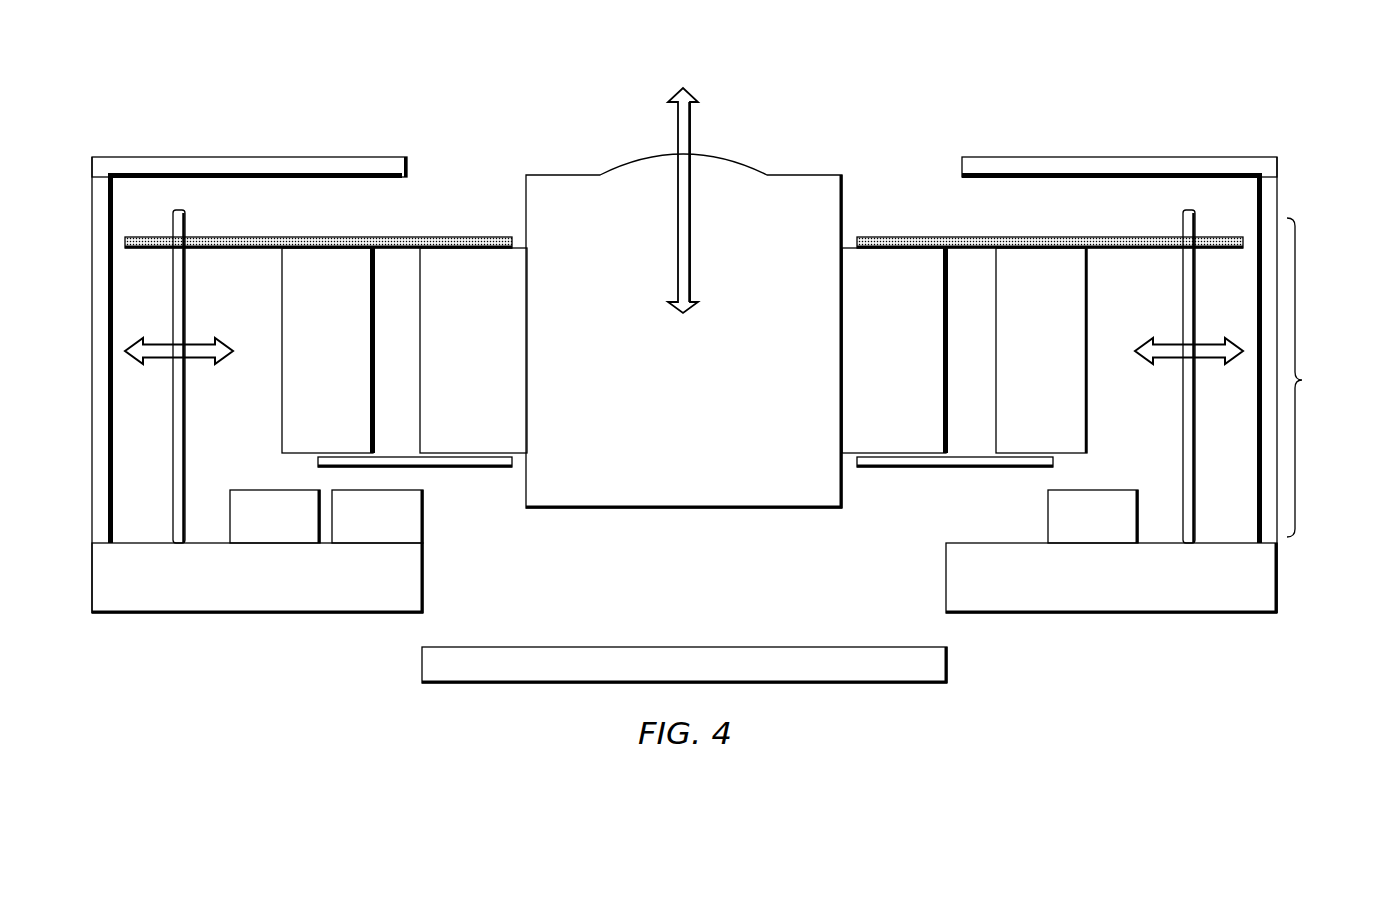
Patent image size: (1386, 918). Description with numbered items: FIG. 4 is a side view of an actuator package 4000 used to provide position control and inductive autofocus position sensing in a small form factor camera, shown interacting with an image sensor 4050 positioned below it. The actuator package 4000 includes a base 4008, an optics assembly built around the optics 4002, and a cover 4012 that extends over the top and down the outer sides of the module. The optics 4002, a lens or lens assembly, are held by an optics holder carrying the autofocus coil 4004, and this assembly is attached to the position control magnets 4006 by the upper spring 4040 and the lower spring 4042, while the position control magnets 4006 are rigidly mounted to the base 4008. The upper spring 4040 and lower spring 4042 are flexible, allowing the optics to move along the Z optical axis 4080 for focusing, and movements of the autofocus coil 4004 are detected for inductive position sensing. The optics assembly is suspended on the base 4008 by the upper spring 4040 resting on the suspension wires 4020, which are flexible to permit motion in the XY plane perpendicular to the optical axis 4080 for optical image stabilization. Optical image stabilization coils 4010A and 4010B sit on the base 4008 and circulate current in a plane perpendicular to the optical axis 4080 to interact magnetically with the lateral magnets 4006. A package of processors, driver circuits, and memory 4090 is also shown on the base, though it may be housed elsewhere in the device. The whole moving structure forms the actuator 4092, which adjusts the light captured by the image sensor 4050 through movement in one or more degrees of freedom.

The actuator package 4000 is at (1048, 73).
The cover 4012 is at (232, 157).
The upper spring 4040 is at (355, 237).
The suspension wire 4020 is at (186, 463).
The position control magnet 4006 is at (348, 393).
The autofocus coil 4004 is at (494, 384).
The lower spring 4042 is at (481, 468).
The optics 4002 is at (704, 479).
The optical axis 4080 is at (683, 88).
The optical image stabilization coil 4010A is at (302, 527).
The package of processors, driver circuits, and memory 4090 is at (397, 527).
The optical image stabilization coil 4010B is at (1120, 526).
The base 4008 is at (277, 599).
The image sensor 4050 is at (767, 675).
The actuator 4092 is at (1304, 381).